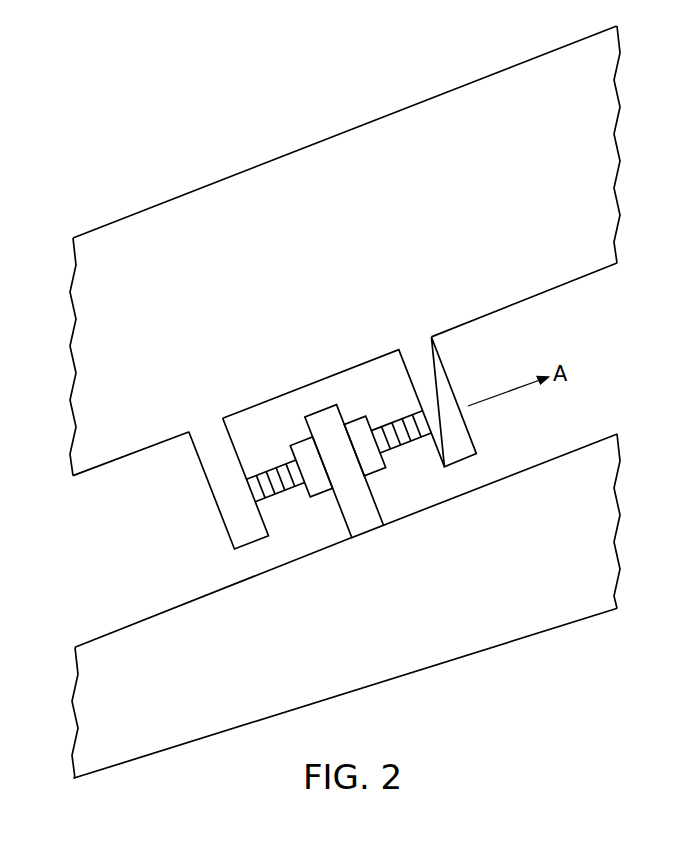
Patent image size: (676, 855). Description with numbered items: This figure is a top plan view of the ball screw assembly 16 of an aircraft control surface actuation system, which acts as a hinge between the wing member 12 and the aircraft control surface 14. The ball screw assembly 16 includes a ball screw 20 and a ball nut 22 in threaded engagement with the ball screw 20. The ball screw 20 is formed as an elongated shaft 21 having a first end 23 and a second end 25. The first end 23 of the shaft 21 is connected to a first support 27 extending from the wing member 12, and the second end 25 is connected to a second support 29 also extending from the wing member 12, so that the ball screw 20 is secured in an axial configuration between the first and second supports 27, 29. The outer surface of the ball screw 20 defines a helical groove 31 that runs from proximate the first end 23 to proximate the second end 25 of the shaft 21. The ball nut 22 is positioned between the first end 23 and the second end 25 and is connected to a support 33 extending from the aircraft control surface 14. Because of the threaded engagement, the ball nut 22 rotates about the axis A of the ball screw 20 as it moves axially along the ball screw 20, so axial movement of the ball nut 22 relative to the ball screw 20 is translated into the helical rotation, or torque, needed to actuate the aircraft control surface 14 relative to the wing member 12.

The wing member 12 is at (213, 179).
The aircraft control surface 14 is at (481, 656).
The ball screw assembly 16 is at (296, 399).
The ball screw 20 is at (280, 497).
The elongated shaft 21 is at (403, 448).
The ball nut 22 is at (372, 467).
The first end 23 is at (260, 475).
The second end 25 is at (410, 412).
The first support 27 is at (213, 504).
The second support 29 is at (451, 373).
The helical groove 31 is at (277, 473).
The support 33 is at (323, 415).